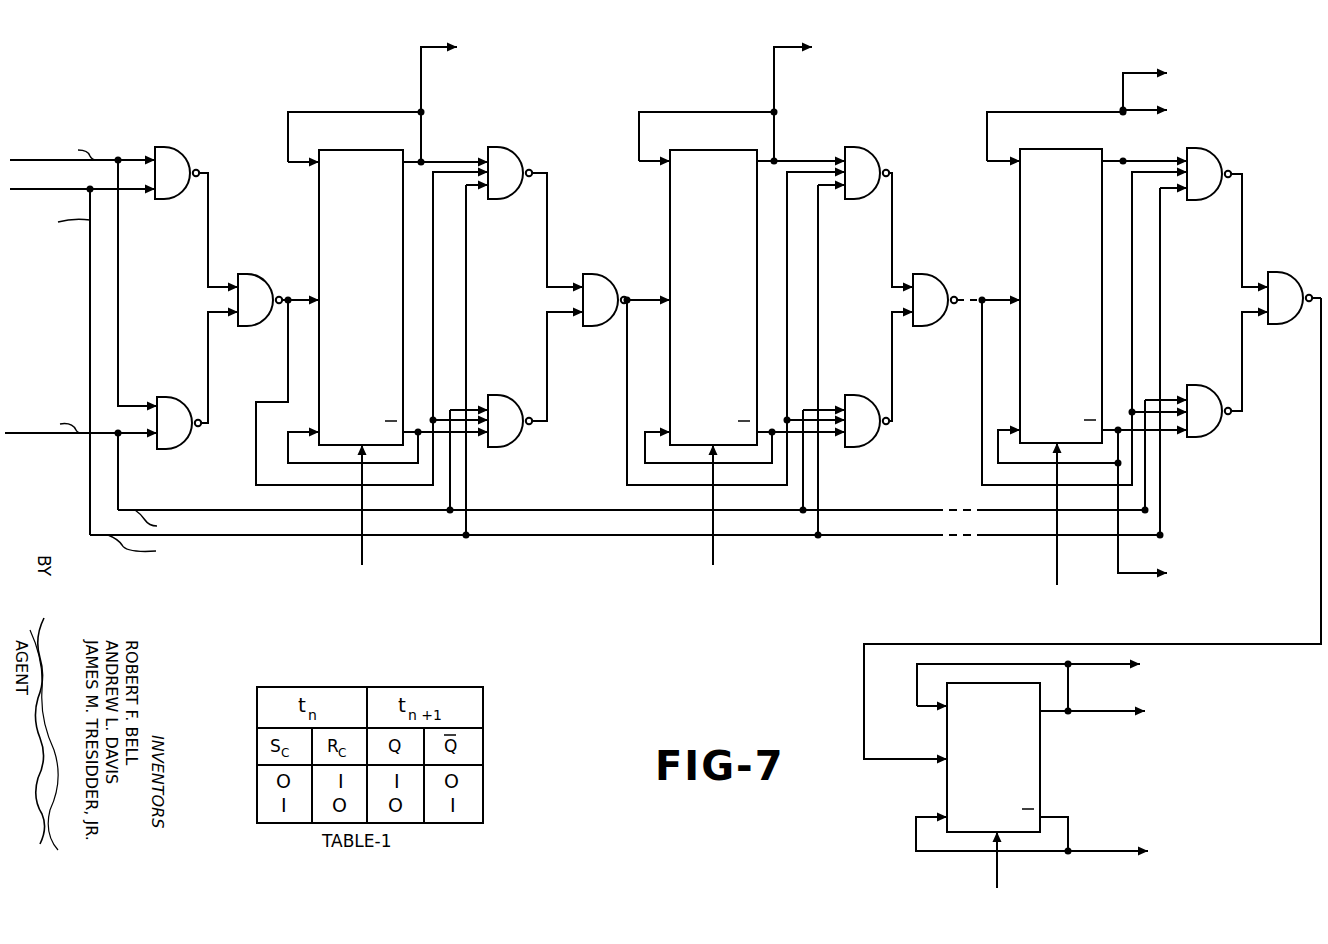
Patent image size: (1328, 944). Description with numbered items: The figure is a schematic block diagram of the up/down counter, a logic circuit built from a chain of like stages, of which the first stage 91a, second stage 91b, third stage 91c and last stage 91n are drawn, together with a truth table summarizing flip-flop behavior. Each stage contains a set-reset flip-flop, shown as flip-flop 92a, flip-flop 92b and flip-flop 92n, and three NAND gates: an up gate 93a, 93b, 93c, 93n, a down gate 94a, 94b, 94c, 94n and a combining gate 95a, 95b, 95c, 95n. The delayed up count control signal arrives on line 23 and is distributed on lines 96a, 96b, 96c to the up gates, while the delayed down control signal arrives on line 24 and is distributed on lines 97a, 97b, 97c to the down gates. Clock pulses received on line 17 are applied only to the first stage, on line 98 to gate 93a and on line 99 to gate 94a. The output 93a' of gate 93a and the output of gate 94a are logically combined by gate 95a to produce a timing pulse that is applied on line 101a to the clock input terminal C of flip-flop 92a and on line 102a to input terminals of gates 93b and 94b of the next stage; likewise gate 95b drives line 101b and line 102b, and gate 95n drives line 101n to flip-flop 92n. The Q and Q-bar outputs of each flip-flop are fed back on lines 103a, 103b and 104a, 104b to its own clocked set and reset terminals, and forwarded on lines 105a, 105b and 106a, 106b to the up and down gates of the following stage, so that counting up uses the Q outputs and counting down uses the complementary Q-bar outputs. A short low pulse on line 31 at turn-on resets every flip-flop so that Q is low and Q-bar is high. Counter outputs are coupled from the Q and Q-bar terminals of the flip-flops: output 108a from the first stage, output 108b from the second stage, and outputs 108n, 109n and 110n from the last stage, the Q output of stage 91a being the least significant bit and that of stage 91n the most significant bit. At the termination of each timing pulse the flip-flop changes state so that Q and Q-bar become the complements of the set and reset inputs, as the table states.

The clock line 17 is at (104, 156).
The delayed up signal line 23 is at (59, 188).
The delayed down signal line 24 is at (62, 440).
The reset pulse line 31 is at (996, 882).
The first stage 91a is at (243, 106).
The second stage 91b is at (610, 98).
The third stage 91c is at (941, 126).
The nth stage 91n is at (840, 710).
The set-reset flip-flop 92a is at (360, 150).
The set-reset flip-flop 92b is at (722, 150).
The set-reset flip-flop 92n is at (994, 682).
The NAND gate 93a is at (196, 203).
The NAND gate output line 93a' is at (169, 263).
The NAND gate 93b is at (502, 146).
The NAND gate 93c is at (866, 144).
The NAND gate 93n is at (1206, 200).
The NAND gate 94a is at (178, 396).
The NAND gate 94b is at (500, 448).
The NAND gate 94c is at (890, 432).
The NAND gate 94n is at (1192, 386).
The NAND gate 95a is at (236, 274).
The NAND gate 95b is at (590, 276).
The NAND gate 95c is at (922, 288).
The NAND gate 95n is at (1270, 272).
The delayed up line 96a is at (130, 200).
The delayed up line 96b is at (466, 225).
The delayed up line 96c is at (818, 226).
The delayed down line 97a is at (124, 434).
The delayed down line 97b is at (470, 410).
The delayed down line 97c is at (825, 410).
The clock line 98 is at (124, 158).
The clock line 99 is at (120, 340).
The timing pulse line 101a is at (292, 298).
The timing pulse line 101b is at (642, 298).
The timing pulse line 101n is at (1321, 472).
The timing signal line 102a is at (256, 442).
The timing signal line 102b is at (628, 372).
The Q feedback line 103a is at (328, 112).
The Q feedback line 103b is at (672, 112).
The Q-bar feedback line 104a is at (288, 456).
The Q-bar feedback line 104b is at (646, 448).
The Q output line 105a is at (462, 160).
The Q output line 105b is at (808, 160).
The Q-bar output line 106a is at (466, 446).
The Q-bar output line 106b is at (822, 446).
The zero crossing output 108a is at (433, 48).
The zero crossing output 108b is at (799, 46).
The zero crossing output 108n is at (1110, 668).
The minus remainder output 109n is at (1090, 712).
The plus remainder output 110n is at (1106, 850).